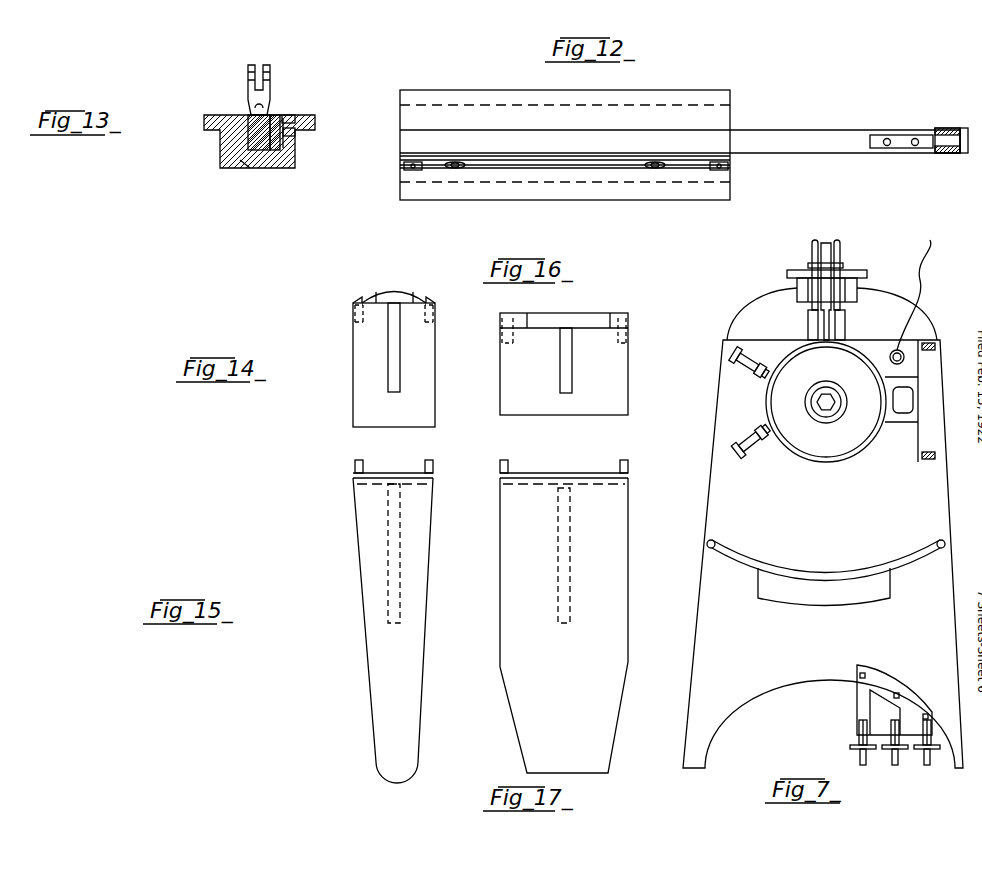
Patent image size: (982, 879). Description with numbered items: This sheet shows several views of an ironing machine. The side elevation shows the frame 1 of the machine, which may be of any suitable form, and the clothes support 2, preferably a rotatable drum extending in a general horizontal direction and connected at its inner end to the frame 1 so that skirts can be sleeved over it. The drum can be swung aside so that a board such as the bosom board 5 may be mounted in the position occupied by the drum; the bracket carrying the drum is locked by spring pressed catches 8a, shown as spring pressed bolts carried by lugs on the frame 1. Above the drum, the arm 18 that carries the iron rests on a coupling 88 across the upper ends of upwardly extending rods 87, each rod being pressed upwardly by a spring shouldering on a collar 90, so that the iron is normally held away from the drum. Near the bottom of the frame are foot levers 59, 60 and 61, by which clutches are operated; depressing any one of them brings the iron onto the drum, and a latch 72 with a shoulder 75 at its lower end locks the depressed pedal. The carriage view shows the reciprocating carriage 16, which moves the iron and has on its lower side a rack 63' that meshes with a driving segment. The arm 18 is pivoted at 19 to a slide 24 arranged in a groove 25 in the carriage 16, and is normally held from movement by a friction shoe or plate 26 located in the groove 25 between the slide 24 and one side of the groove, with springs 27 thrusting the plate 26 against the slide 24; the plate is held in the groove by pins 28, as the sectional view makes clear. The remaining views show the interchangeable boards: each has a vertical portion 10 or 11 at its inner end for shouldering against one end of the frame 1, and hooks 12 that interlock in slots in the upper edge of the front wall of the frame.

In FIG. 7, the frame 1 is at (723, 484).
In FIG. 7, the clothes support 2 is at (805, 443).
In FIG. 7, the bosom board 5 is at (815, 575).
In FIG. 7, the spring pressed catches 8a is at (740, 432).
In FIG. 14, the vertical portion 10 is at (428, 366).
In FIG. 16, the vertical portion 11 is at (503, 377).
In FIG. 14, the hooks 12 is at (353, 313).
In FIG. 16, the hooks 12 is at (502, 335).
In FIG. 15, the hooks 12 is at (425, 462).
In FIG. 17, the hooks 12 is at (620, 462).
In FIG. 13, the carriage 16 is at (222, 147).
In FIG. 12, the carriage 16 is at (515, 92).
In FIG. 7, the carriage 16 is at (797, 290).
In FIG. 7, the support or arm 18 is at (827, 258).
In FIG. 13, the pivot 19 is at (262, 96).
In FIG. 12, the pivot 19 is at (947, 128).
In FIG. 13, the slide 24 is at (252, 118).
In FIG. 12, the slide 24 is at (657, 140).
In FIG. 12, the way or groove 25 is at (525, 130).
In FIG. 13, the shoe or plate 26 is at (276, 152).
In FIG. 12, the shoe or plate 26 is at (513, 157).
In FIG. 13, the springs 27 is at (291, 136).
In FIG. 12, the springs 27 is at (465, 168).
In FIG. 13, the pins 28 is at (305, 122).
In FIG. 12, the pins 28 is at (403, 165).
In FIG. 7, the foot lever 59 is at (850, 747).
In FIG. 7, the foot lever 60 is at (930, 752).
In FIG. 7, the foot lever 61 is at (898, 755).
In FIG. 13, the rack 63' is at (229, 183).
In FIG. 7, the latch 72 is at (927, 730).
In FIG. 7, the shoulder 75 is at (860, 759).
In FIG. 7, the rods 87 is at (812, 245).
In FIG. 7, the coupling 88 is at (808, 265).
In FIG. 7, the collar 90 is at (808, 313).